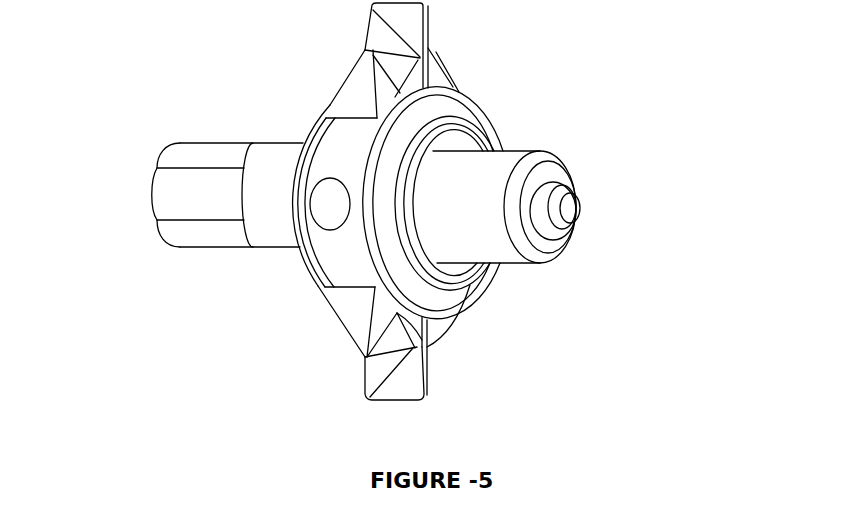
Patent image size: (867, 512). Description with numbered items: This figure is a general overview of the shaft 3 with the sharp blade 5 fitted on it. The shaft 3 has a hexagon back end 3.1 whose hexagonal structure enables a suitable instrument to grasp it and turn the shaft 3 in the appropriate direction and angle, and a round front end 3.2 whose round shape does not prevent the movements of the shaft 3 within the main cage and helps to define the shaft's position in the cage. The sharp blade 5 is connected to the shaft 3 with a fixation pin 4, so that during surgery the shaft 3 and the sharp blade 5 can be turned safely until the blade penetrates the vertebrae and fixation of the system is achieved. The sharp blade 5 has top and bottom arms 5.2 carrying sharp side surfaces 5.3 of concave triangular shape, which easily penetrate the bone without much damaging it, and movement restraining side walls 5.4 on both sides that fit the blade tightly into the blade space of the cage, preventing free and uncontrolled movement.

The shaft 3 is at (165, 148).
The hexagon back end 3.1 is at (170, 197).
The round front end 3.2 is at (568, 205).
The fixation pin 4 is at (332, 210).
The sharp blade 5 is at (381, 209).
The top and bottom arms 5.2 is at (423, 83).
The sharp side surfaces 5.3 is at (382, 38).
The movement restraining side walls 5.4 is at (443, 302).